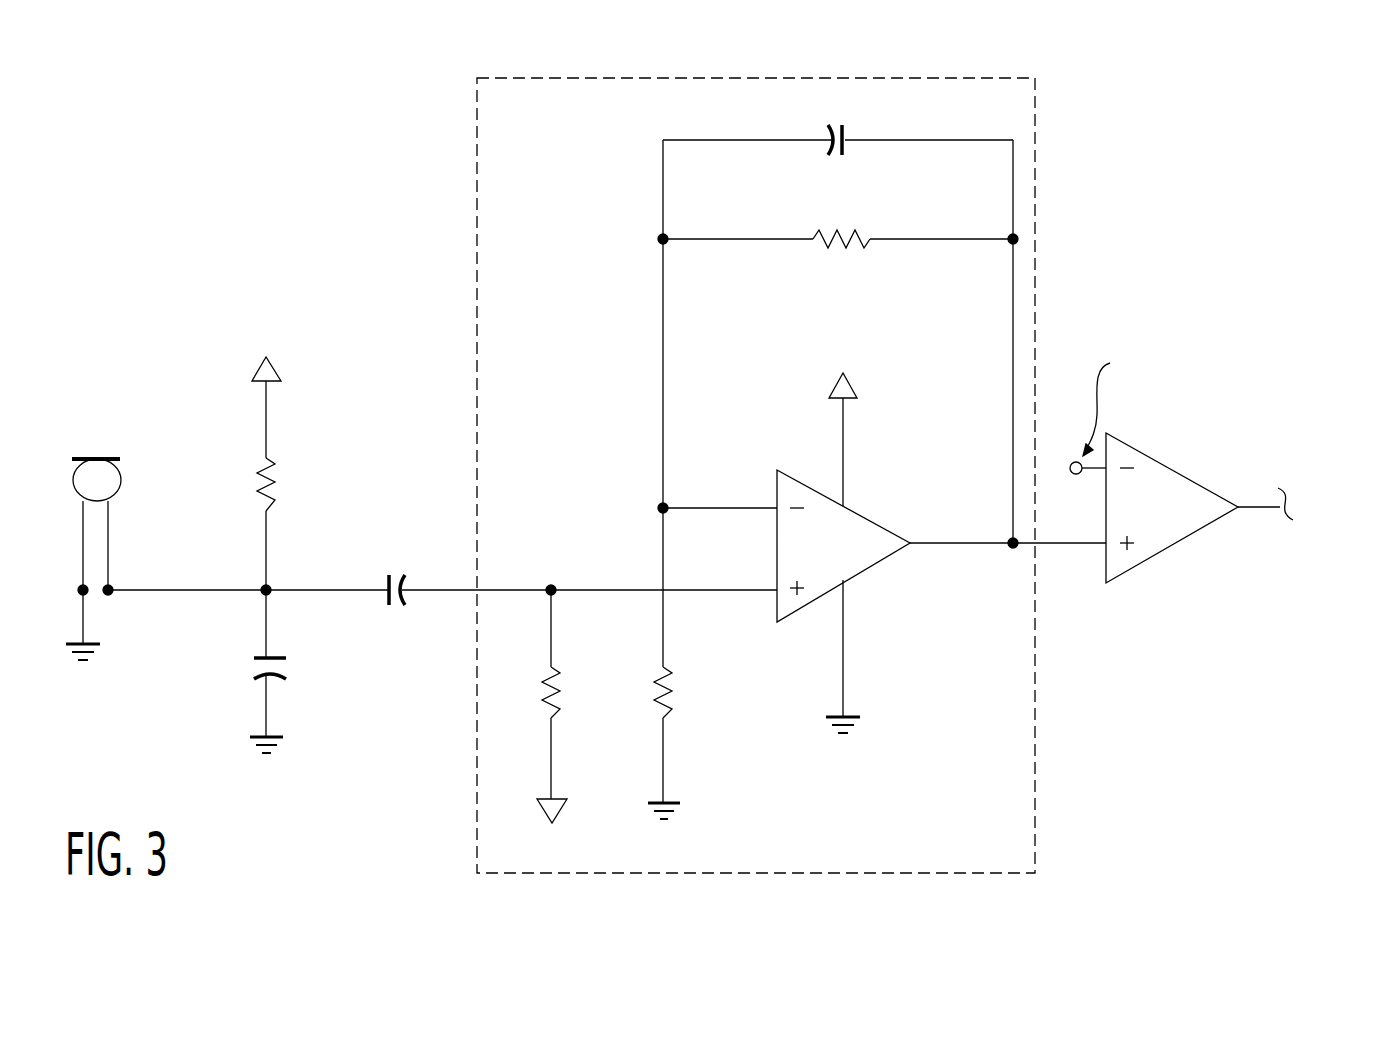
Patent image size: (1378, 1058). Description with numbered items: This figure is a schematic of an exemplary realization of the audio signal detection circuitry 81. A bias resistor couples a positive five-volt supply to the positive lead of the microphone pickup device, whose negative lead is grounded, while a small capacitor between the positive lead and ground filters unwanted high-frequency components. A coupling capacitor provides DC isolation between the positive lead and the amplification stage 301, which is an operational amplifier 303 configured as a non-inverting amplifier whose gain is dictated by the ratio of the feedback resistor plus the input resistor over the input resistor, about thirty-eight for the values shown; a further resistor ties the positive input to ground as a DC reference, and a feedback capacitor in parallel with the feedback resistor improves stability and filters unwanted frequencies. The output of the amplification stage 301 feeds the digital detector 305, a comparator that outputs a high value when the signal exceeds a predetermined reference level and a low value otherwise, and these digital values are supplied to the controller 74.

The audio signal detection circuitry 81 is at (437, 143).
The amplification stage 301 is at (1035, 118).
The operational amplifier 303 is at (875, 567).
The digital detector 305 is at (1132, 572).
The controller 74 is at (1305, 629).